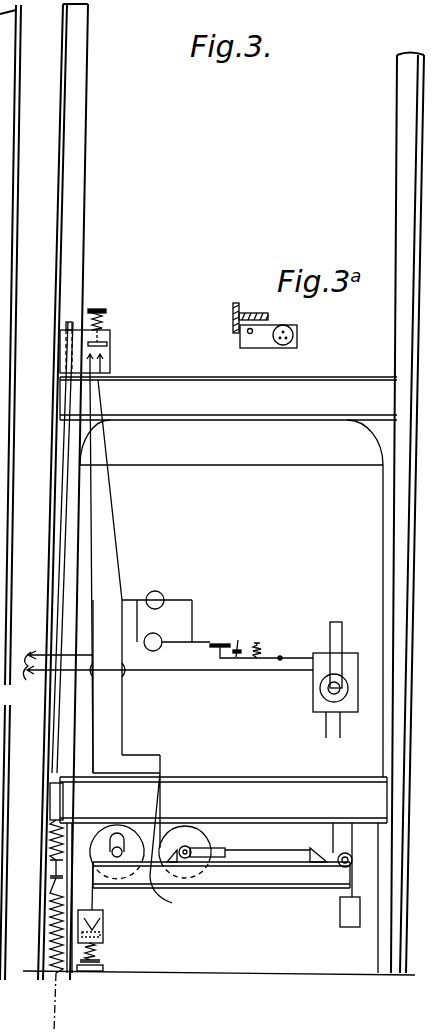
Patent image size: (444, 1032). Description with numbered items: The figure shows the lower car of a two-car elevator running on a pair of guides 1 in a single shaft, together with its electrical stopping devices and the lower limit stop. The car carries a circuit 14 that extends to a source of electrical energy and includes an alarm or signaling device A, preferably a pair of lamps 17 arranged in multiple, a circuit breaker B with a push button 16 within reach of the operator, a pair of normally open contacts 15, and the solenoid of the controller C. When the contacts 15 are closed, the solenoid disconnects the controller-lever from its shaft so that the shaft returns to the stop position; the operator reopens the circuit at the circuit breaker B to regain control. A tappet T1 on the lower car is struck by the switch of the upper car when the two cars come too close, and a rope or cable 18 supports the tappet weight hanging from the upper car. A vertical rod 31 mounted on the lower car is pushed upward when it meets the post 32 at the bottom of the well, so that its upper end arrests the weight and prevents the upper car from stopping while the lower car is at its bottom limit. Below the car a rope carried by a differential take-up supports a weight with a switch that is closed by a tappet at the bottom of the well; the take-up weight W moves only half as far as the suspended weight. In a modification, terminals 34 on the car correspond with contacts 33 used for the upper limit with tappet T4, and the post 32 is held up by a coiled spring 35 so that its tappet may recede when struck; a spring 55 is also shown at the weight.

In FIG. 3, the guides 1 is at (17, 250).
In FIG. 3A, the guides 1 is at (233, 316).
In FIG. 3, the tappet T4 is at (0, 30).
In FIG. 3, the terminals 34 is at (0, 61).
In FIG. 3, the contacts 33 is at (0, 82).
In FIG. 3, the tappet T1 is at (110, 341).
In FIG. 3, the contacts 15 is at (102, 357).
In FIG. 3, the vertical rod 31 is at (62, 614).
In FIG. 3, the circuit 14 is at (34, 676).
In FIG. 3, the lamps 17 is at (164, 598).
In FIG. 3, the alarm or signaling device A is at (155, 576).
In FIG. 3, the push button 16 is at (238, 646).
In FIG. 3, the circuit breaker B is at (267, 640).
In FIG. 3, the controller C is at (320, 692).
In FIG. 3, the take-up weight W is at (350, 925).
In FIG. 3, the spring 55 is at (101, 961).
In FIG. 3, the post 32 is at (53, 884).
In FIG. 3, the coiled spring 35 is at (52, 927).
In FIG. 3A, the rope or cable 18 is at (248, 334).